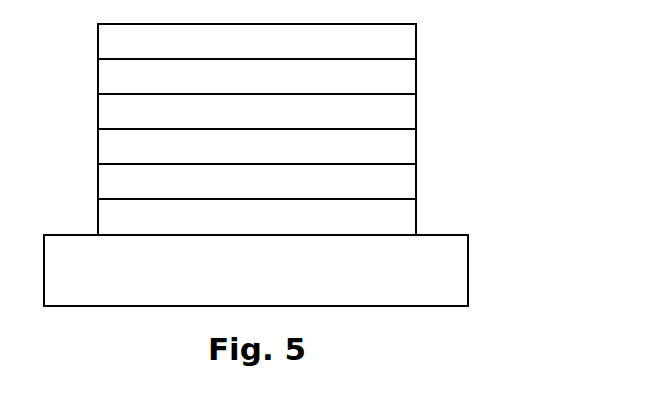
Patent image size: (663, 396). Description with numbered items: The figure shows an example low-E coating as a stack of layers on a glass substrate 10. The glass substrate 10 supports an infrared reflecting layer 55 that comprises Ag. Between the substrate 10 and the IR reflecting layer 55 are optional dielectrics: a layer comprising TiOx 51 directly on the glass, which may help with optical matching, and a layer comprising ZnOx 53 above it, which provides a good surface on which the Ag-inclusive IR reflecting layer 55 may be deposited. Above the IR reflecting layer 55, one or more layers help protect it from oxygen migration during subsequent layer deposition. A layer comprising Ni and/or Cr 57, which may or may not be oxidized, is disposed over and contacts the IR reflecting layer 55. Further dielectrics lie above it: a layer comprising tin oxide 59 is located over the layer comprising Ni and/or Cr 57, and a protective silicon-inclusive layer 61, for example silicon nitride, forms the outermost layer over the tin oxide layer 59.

The glass substrate 10 is at (468, 270).
The layer comprising TiOx 51 is at (416, 217).
The layer comprising ZnOx 53 is at (416, 182).
The infrared (IR) reflecting layer 55 is at (416, 147).
The layer comprising Ni and/or Cr 57 is at (416, 110).
The layer comprising tin oxide 59 is at (416, 75).
The protective silicon-inclusive layer 61 is at (416, 42).